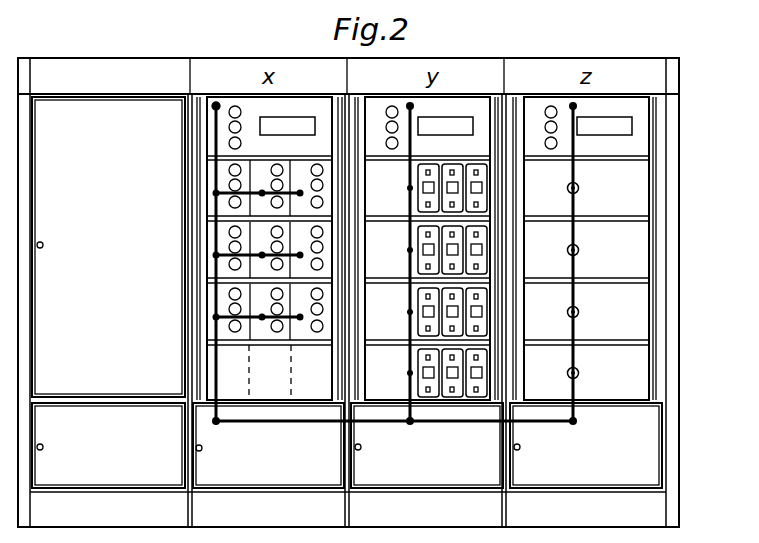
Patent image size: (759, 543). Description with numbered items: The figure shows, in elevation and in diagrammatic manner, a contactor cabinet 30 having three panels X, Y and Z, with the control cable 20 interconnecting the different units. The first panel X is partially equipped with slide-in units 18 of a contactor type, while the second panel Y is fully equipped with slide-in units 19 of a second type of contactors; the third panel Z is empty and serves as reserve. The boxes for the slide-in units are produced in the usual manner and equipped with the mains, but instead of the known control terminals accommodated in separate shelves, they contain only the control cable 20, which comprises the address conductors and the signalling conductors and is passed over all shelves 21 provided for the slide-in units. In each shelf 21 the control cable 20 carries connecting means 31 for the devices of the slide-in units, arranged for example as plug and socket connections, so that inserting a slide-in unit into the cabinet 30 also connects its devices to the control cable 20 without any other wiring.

The slide-in units 18 is at (211, 181).
The slide-in units 19 is at (396, 200).
The control cable 20 is at (459, 424).
The shelves 21 is at (263, 371).
The switchgear cabinet 30 is at (660, 264).
The connecting means 31 is at (567, 188).